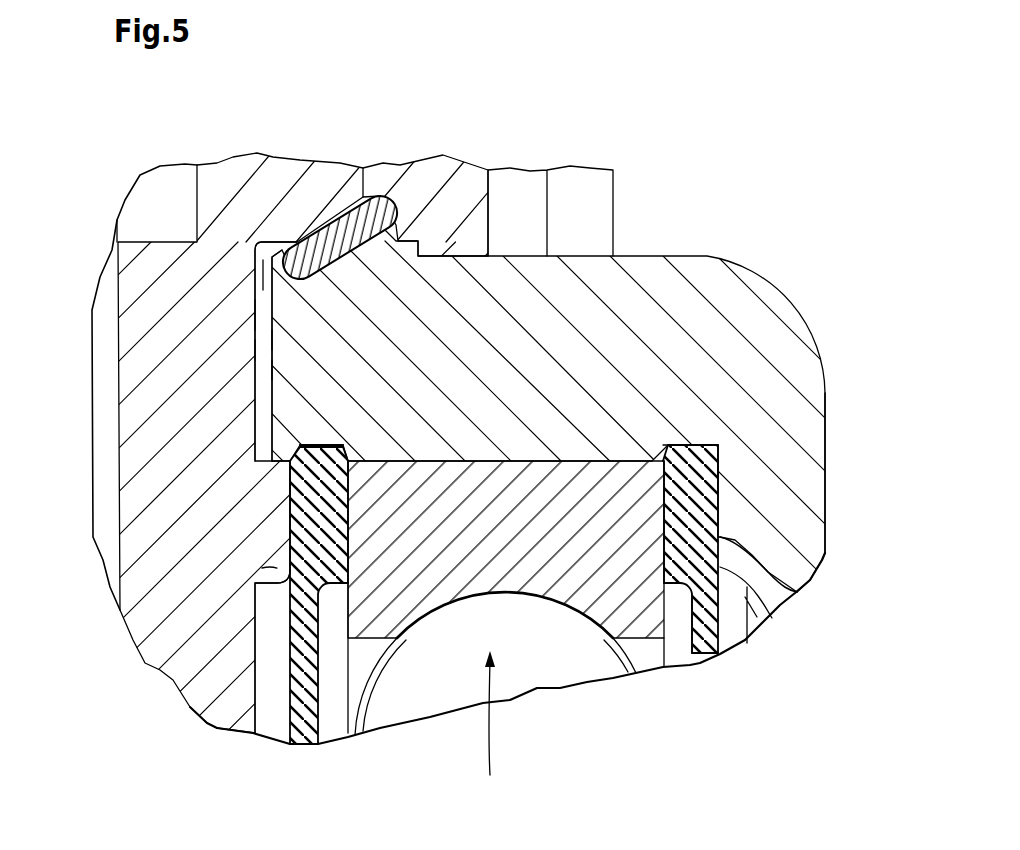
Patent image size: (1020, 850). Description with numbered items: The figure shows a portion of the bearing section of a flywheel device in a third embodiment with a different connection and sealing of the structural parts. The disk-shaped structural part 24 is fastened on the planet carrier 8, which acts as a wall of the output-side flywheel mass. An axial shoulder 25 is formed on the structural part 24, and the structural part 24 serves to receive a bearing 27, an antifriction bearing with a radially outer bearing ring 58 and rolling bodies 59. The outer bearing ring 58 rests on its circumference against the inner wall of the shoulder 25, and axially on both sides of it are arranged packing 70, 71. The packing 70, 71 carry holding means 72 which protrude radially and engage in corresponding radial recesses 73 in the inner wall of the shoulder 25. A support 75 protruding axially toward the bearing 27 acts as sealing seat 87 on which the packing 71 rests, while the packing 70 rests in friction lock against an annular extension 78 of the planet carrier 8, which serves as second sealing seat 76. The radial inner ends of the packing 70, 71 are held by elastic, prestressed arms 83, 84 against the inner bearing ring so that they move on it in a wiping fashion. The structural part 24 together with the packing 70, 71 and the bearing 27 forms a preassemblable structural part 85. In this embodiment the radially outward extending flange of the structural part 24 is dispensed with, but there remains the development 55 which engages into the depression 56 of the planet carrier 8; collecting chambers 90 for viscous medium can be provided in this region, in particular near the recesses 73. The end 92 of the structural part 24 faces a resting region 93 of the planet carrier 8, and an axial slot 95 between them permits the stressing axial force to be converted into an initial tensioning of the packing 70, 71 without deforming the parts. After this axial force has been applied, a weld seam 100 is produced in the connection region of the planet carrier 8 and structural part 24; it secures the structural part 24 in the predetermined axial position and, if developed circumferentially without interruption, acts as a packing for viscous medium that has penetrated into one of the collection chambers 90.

The planet carrier 8 is at (162, 637).
The disk-shaped structural part 24 is at (625, 238).
The axial shoulder 25 is at (652, 283).
The bearing 27 is at (482, 731).
The circumferential development 55 is at (283, 422).
The depression 56 is at (253, 312).
The outer bearing ring 58 is at (540, 568).
The rolling bodies 59 is at (520, 680).
The packing 70 is at (302, 740).
The packing 71 is at (710, 655).
The holding means 72 is at (290, 478).
The radial recesses 73 is at (673, 445).
The support 75 is at (757, 598).
The second sealing seat 76 is at (278, 568).
The annular extension 78 is at (200, 687).
The resilient arm 83 is at (322, 720).
The resilient arm 84 is at (700, 640).
The preassemblable structural part 85 is at (828, 396).
The sealing seat 87 is at (797, 593).
The collecting chambers 90 is at (270, 367).
The end 92 is at (262, 347).
The resting region 93 is at (266, 338).
The axial slot 95 is at (263, 275).
The weld seam 100 is at (369, 202).